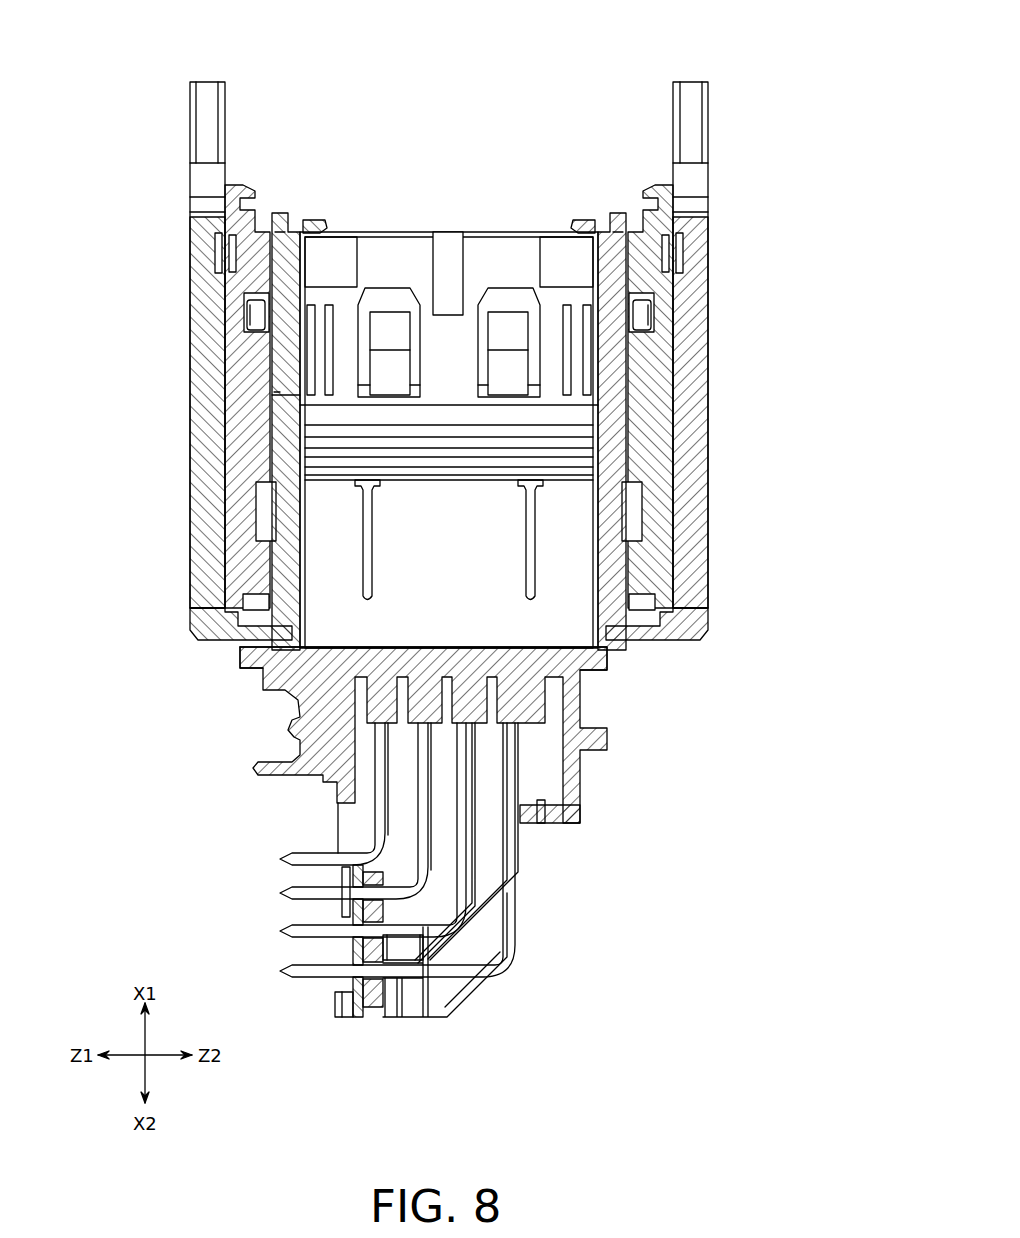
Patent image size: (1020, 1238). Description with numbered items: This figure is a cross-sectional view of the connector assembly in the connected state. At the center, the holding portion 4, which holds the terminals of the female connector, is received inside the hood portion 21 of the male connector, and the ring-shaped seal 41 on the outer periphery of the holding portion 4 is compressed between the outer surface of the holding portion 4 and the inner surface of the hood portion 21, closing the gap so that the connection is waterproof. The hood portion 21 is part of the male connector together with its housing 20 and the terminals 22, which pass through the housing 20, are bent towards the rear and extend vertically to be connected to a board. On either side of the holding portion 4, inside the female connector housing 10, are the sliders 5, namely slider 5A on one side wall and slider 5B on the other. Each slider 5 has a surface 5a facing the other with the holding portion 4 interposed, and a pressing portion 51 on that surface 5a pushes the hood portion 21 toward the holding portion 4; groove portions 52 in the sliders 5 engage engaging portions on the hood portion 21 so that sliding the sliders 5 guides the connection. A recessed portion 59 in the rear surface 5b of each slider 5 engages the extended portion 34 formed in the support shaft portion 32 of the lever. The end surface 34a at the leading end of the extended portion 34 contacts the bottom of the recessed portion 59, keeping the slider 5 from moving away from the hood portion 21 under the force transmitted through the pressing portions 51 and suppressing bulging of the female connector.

The holding portion 4 is at (460, 232).
The slider 5 is at (437, 366).
The slider 5A is at (224, 366).
The slider 5B is at (668, 578).
The surface 5a is at (292, 572).
The rear surface 5b is at (209, 626).
The housing 10 is at (228, 648).
The housing 20 is at (585, 790).
The hood portion 21 is at (610, 660).
The terminals 22 is at (278, 888).
The support shaft portion 32 is at (190, 238).
The extended portion 34 is at (225, 400).
The end surface 34a is at (292, 402).
The seal 41 is at (482, 470).
The pressing portion 51 is at (277, 392).
The groove portions 52 is at (262, 520).
The recessed portion 59 is at (247, 345).